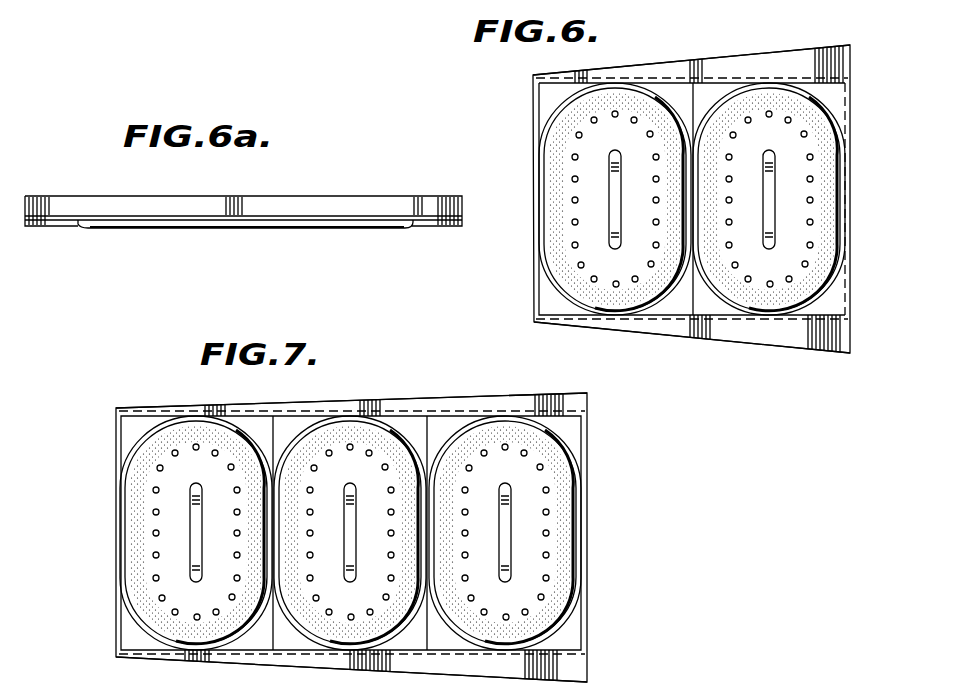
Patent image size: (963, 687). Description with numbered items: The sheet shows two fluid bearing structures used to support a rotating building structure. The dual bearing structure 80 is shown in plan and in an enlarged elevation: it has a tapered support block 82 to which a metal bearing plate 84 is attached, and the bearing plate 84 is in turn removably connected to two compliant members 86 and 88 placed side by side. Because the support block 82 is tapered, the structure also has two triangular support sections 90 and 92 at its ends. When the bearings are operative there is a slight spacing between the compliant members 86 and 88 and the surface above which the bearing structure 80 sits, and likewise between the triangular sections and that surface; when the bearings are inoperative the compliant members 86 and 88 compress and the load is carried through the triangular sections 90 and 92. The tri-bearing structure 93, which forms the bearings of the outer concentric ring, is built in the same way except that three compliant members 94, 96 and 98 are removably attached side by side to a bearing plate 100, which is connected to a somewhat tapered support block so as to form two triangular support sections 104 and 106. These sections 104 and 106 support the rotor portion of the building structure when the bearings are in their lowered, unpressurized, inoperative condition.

In FIG. 6, the bearing structure 80 is at (528, 130).
In FIG. 6A, the bearing structure 80 is at (322, 190).
In FIG. 6A, the tapered support block 82 is at (249, 203).
In FIG. 6, the metal bearing plate 84 is at (828, 96).
In FIG. 6A, the metal bearing plate 84 is at (165, 214).
In FIG. 6, the compliant member 86 is at (740, 99).
In FIG. 6A, the compliant member 86 is at (257, 232).
In FIG. 6, the compliant member 88 is at (614, 97).
In FIG. 6, the triangular support section 90 is at (803, 62).
In FIG. 6A, the triangular support section 90 is at (52, 226).
In FIG. 6, the triangular support section 92 is at (810, 343).
In FIG. 6A, the triangular support section 92 is at (442, 228).
In FIG. 7, the tri-bearing structure 93 is at (394, 390).
In FIG. 7, the compliant member 94 is at (197, 427).
In FIG. 7, the compliant member 96 is at (350, 425).
In FIG. 7, the compliant member 98 is at (493, 432).
In FIG. 7, the bearing plate 100 is at (565, 427).
In FIG. 7, the triangular support section 104 is at (563, 668).
In FIG. 7, the triangular support section 106 is at (528, 402).